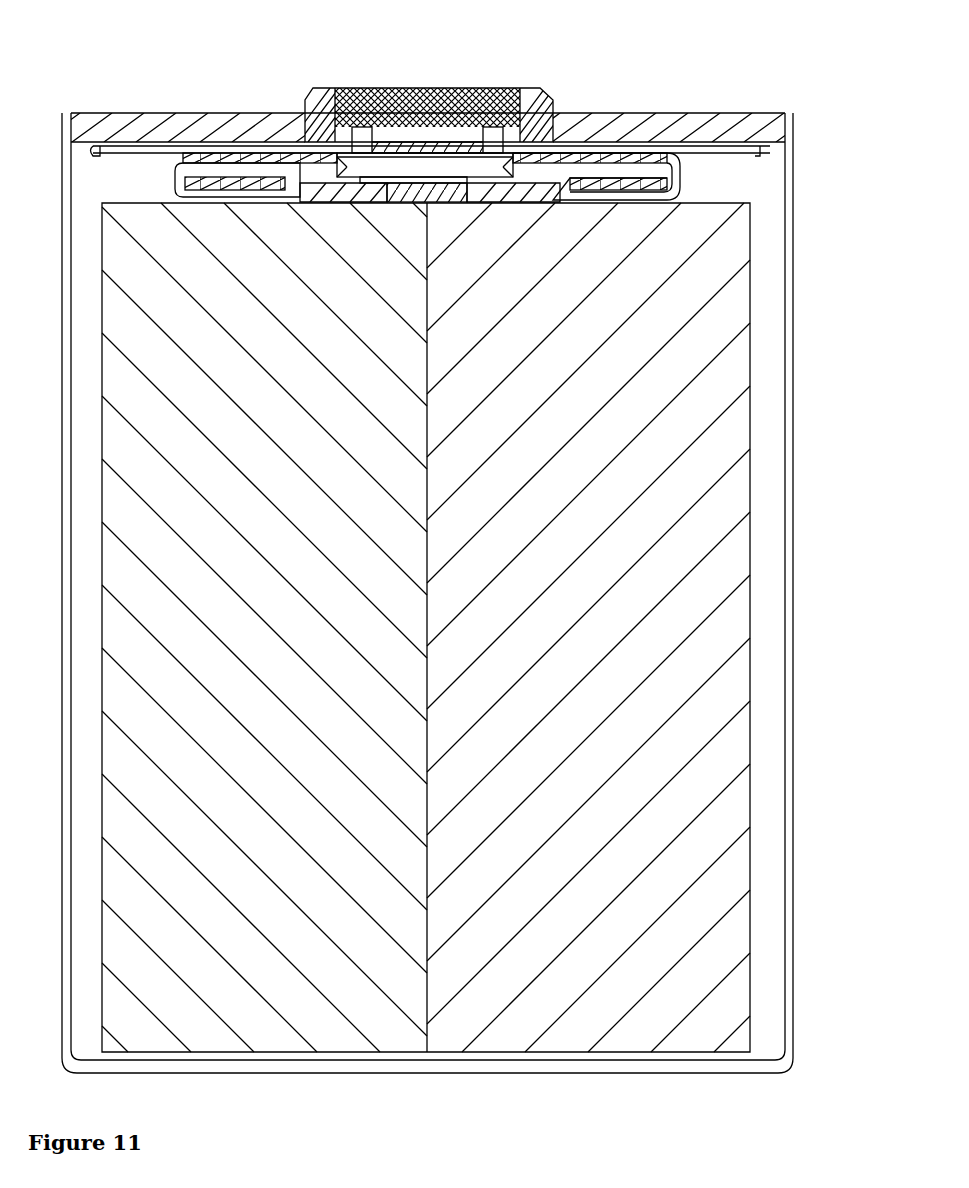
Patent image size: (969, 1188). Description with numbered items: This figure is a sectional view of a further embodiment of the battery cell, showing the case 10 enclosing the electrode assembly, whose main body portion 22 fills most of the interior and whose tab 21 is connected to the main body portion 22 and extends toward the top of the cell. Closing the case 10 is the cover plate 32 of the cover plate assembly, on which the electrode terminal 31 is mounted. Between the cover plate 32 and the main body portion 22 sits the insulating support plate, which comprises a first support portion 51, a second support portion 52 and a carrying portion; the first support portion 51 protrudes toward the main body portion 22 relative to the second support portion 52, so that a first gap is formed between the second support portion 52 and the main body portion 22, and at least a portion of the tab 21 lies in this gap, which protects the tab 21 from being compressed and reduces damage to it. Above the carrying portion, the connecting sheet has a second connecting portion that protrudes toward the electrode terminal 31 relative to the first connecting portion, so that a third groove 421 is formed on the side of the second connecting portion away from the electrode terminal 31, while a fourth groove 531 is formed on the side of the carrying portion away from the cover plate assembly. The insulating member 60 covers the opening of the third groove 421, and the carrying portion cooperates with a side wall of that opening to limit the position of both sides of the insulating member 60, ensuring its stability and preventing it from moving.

The case 10 is at (788, 586).
The main body portion 22 is at (735, 490).
The cover plate 32 is at (647, 112).
The electrode terminal 31 is at (462, 163).
The insulating member 60 is at (513, 117).
The third groove 421 is at (397, 137).
The fourth groove 531 is at (435, 193).
The first support portion 51 is at (320, 198).
The tab 21 is at (172, 165).
The second support portion 52 is at (242, 185).